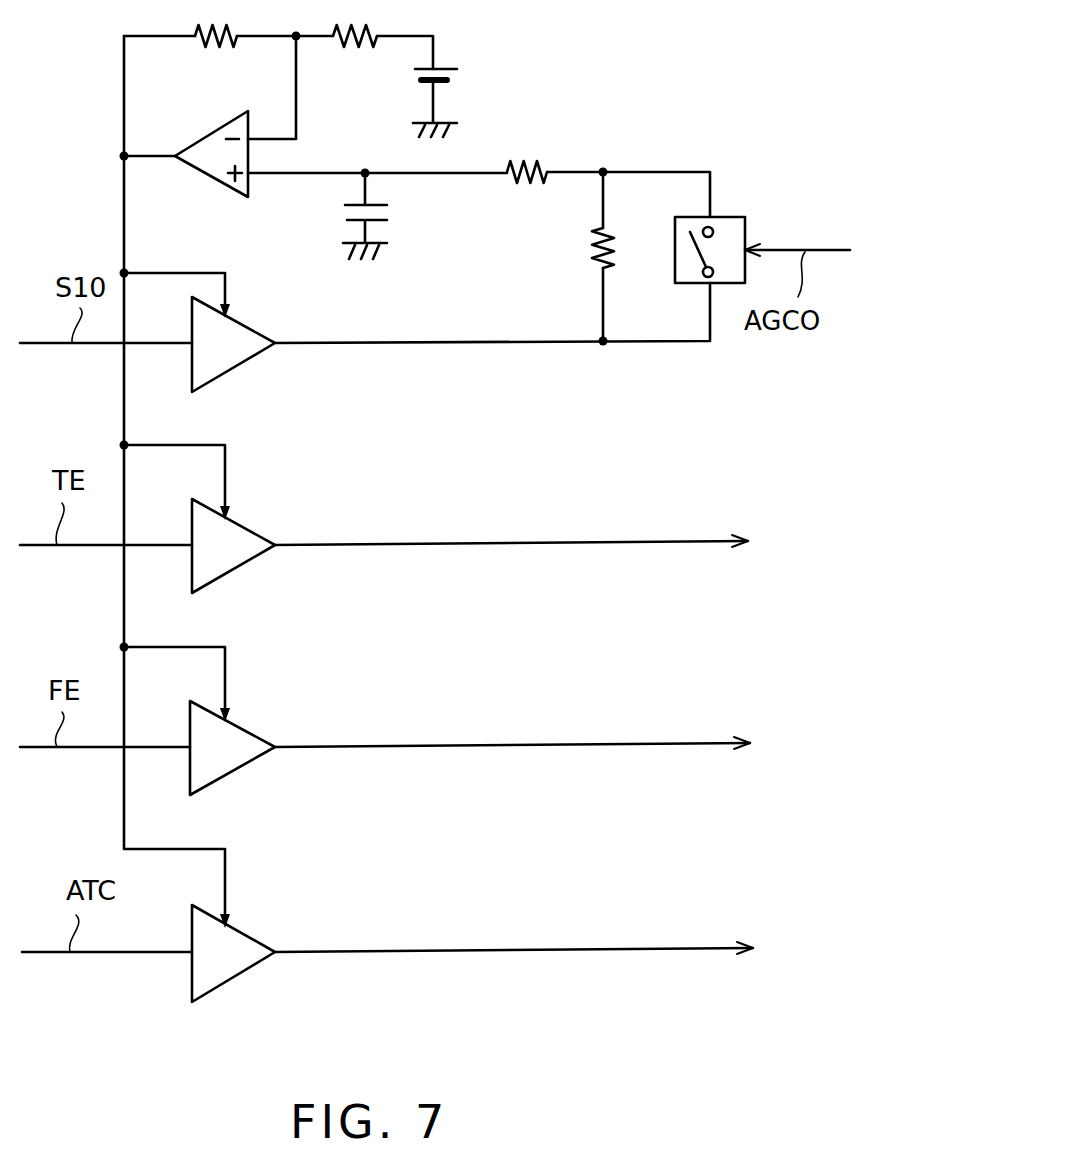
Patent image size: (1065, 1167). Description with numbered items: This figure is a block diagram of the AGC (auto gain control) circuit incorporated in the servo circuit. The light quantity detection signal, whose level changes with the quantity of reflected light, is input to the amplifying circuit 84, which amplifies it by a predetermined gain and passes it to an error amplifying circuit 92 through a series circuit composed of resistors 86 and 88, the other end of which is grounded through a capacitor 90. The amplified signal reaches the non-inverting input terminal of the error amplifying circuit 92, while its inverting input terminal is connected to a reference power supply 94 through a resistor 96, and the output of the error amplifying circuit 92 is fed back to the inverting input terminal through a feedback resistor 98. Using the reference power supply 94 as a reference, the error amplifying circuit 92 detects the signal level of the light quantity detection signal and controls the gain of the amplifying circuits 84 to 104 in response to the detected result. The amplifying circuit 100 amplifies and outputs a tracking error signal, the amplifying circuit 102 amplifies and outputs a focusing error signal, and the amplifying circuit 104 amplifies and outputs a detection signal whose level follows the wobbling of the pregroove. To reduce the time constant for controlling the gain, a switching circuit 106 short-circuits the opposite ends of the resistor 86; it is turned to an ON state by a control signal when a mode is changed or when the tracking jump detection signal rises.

The amplifying circuit 84 is at (250, 358).
The resistor 86 is at (590, 250).
The resistor 88 is at (515, 184).
The capacitor 90 is at (348, 220).
The error amplifying circuit 92 is at (232, 184).
The reference power supply 94 is at (447, 66).
The resistor 96 is at (350, 48).
The feedback resistor 98 is at (205, 48).
The amplifying circuit 100 is at (250, 560).
The amplifying circuit 102 is at (245, 768).
The amplifying circuit 104 is at (255, 936).
The switching circuit 106 is at (725, 216).